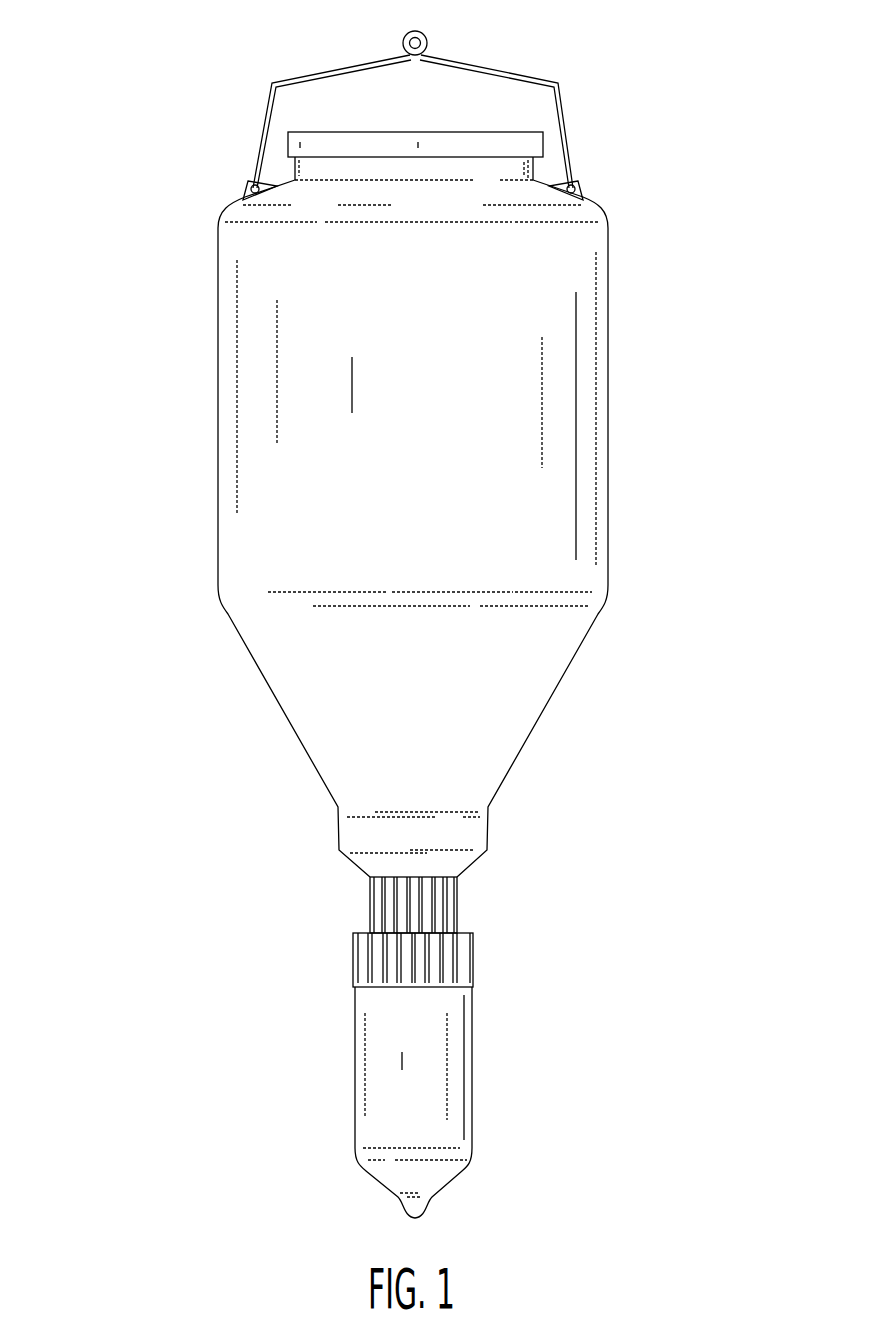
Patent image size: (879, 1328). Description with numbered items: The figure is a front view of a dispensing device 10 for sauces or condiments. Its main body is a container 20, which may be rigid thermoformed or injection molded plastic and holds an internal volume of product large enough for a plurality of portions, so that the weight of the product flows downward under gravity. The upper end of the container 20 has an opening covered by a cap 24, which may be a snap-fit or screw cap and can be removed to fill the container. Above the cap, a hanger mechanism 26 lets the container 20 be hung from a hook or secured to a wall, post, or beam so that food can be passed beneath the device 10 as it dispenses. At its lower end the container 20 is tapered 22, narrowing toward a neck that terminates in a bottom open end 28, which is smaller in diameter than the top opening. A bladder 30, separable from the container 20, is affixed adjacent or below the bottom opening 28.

The dispensing device 10 is at (173, 325).
The container 20 is at (543, 398).
The tapered end 22 is at (577, 715).
The cap 24 is at (513, 144).
The hanger mechanism 26 is at (485, 68).
The bottom open end 28 is at (488, 880).
The bladder 30 is at (513, 1090).